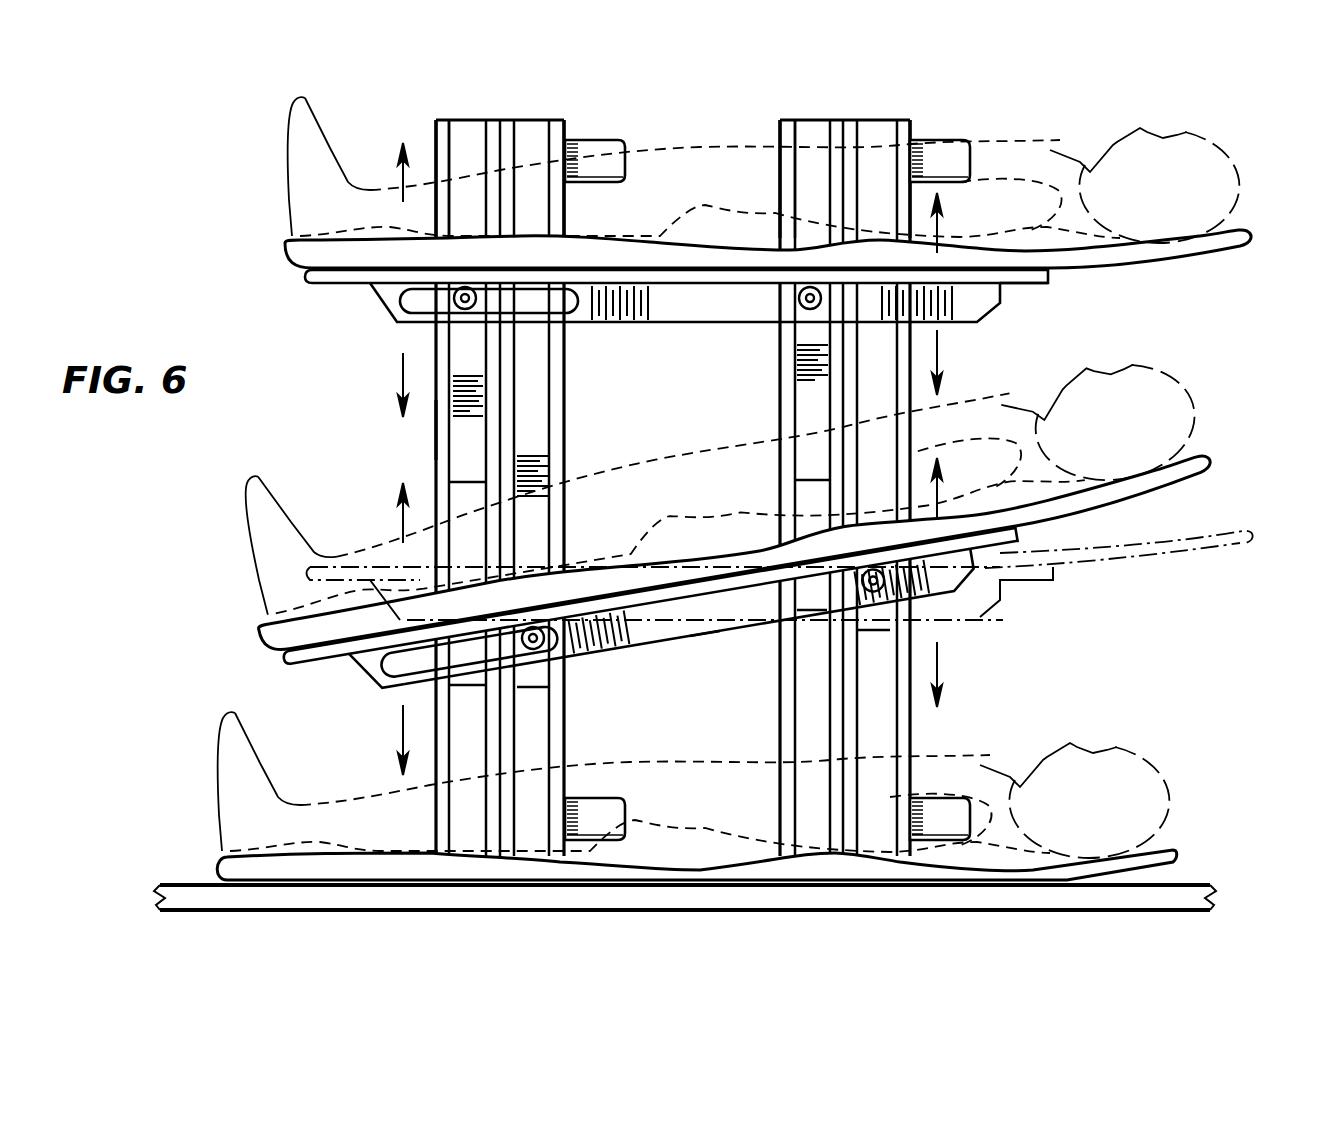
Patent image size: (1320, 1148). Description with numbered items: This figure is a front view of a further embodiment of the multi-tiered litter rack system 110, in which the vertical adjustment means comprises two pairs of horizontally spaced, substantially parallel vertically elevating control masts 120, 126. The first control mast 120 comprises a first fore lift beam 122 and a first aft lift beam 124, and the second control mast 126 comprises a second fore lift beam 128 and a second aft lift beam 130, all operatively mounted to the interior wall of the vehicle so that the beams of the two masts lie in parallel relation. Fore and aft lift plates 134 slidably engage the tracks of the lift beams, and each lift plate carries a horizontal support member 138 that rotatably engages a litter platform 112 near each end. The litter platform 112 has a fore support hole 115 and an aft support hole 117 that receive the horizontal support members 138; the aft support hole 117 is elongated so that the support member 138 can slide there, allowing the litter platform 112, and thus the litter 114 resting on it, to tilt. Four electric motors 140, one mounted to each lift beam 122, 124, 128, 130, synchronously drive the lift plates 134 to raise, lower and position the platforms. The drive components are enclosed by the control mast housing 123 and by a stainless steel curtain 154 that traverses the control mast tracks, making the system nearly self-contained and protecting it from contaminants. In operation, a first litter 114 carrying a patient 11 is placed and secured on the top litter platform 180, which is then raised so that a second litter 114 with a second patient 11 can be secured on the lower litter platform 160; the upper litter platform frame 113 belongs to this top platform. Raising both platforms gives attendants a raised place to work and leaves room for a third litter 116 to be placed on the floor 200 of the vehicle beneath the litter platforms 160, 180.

The patient 11 is at (1213, 143).
The multi-tiered litter rack system 110 is at (567, 436).
The litter platform 112 is at (996, 312).
The upper litter platform frame 113 is at (715, 322).
The litter 114 is at (1245, 233).
The fore support hole 115 is at (785, 342).
The third litter 116 is at (215, 865).
The aft support hole 117 is at (393, 323).
The first control mast 120 is at (528, 118).
The first fore lift beam 122 is at (912, 142).
The control mast housing 123 is at (432, 432).
The first aft lift beam 124 is at (556, 118).
The second control mast 126 is at (462, 118).
The second fore lift beam 128 is at (792, 118).
The second aft lift beam 130 is at (452, 119).
The fore and aft lift plates 134 is at (478, 432).
The horizontal support member 138 is at (822, 298).
The electric motor 140 is at (607, 152).
The stainless steel curtain 154 is at (460, 505).
The lower litter platform 160 is at (703, 640).
The top litter platform 180 is at (1000, 287).
The floor 200 is at (1185, 882).